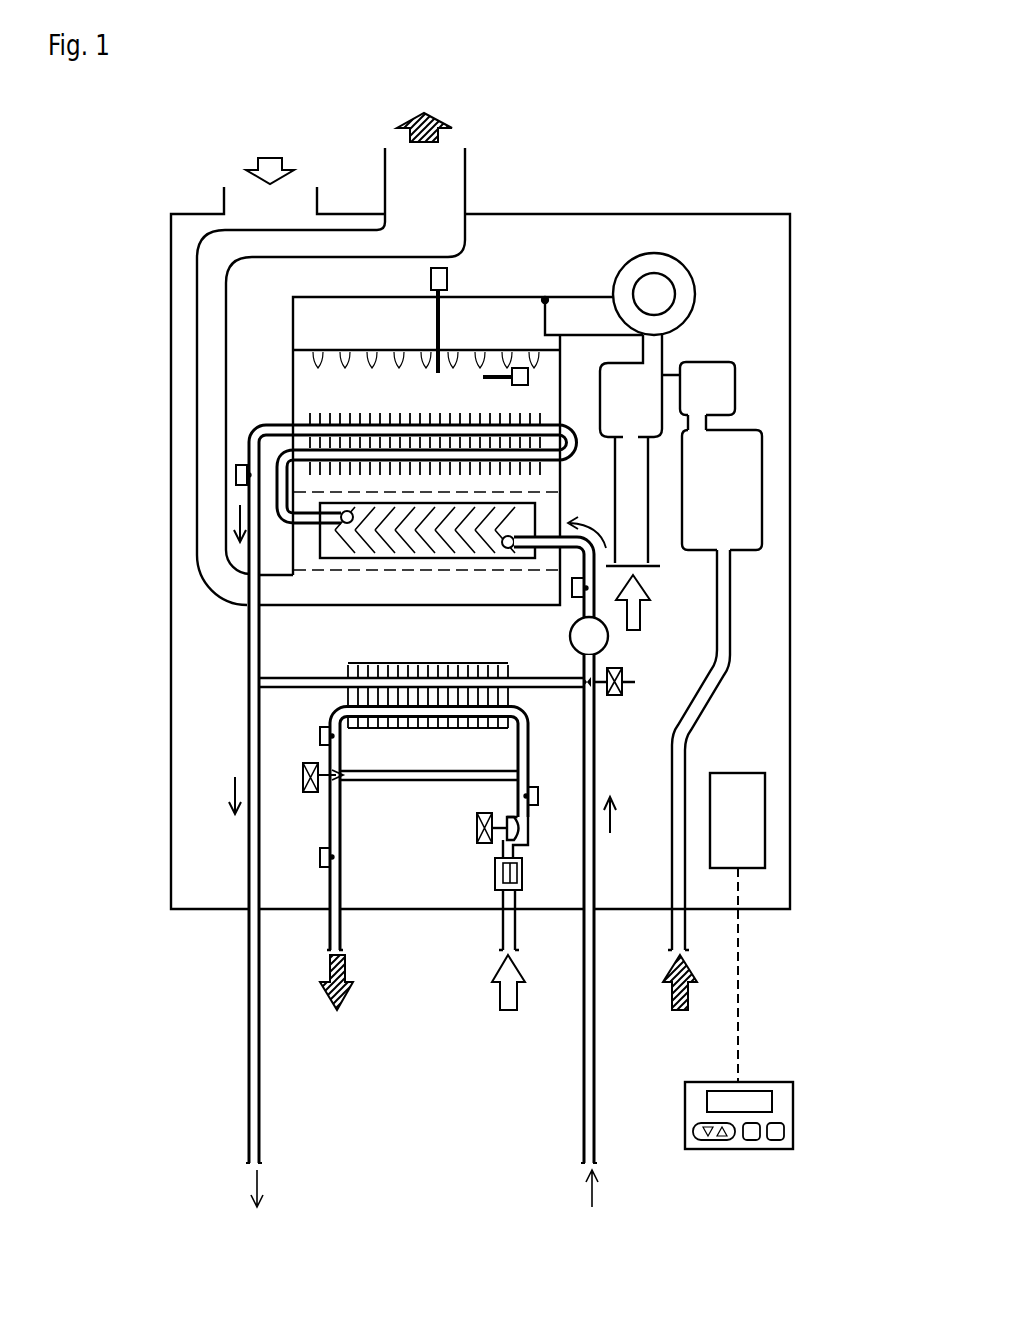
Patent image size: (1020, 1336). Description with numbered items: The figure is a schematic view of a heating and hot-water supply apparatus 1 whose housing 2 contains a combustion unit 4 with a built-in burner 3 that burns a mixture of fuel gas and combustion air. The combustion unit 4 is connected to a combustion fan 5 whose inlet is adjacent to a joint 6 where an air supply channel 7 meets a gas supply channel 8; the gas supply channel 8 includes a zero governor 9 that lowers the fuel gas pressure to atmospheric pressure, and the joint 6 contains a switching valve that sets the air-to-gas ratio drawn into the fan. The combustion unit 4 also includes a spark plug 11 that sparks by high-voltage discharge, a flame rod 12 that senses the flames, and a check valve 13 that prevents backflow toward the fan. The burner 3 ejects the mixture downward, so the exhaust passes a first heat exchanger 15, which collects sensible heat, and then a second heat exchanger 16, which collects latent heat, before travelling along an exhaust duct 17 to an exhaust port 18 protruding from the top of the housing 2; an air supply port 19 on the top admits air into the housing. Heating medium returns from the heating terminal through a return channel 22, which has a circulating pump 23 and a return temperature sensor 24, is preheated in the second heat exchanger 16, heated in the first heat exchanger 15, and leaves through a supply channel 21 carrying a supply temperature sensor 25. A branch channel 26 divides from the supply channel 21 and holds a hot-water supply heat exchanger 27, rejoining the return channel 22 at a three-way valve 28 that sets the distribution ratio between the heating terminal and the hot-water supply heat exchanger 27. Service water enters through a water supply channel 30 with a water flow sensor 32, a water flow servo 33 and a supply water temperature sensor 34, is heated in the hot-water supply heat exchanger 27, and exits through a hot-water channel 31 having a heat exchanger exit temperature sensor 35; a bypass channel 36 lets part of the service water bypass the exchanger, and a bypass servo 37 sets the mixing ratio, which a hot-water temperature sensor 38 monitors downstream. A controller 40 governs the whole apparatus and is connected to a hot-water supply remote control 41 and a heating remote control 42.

The heating and hot-water supply apparatus 1 is at (792, 160).
The housing 2 is at (692, 214).
The burner 3 is at (293, 372).
The combustion unit 4 is at (290, 327).
The combustion fan 5 is at (695, 294).
The joint 6 is at (667, 407).
The air supply channel 7 is at (650, 555).
The gas supply channel 8 is at (715, 690).
The zero governor 9 is at (762, 482).
The spark plug 11 is at (447, 330).
The flame rod 12 is at (493, 372).
The check valve 13 is at (548, 308).
The first heat exchanger 15 is at (305, 425).
The second heat exchanger 16 is at (340, 570).
The exhaust duct 17 is at (198, 520).
The exhaust port 18 is at (395, 142).
The air supply port 19 is at (233, 183).
The supply channel 21 is at (249, 740).
The return channel 22 is at (584, 1085).
The circulating pump 23 is at (570, 636).
The return temperature sensor 24 is at (572, 588).
The supply temperature sensor 25 is at (237, 475).
The branch channel 26 is at (285, 677).
The hot-water supply heat exchanger 27 is at (428, 663).
The three-way valve 28 is at (635, 682).
The water supply channel 30 is at (502, 922).
The hot-water channel 31 is at (343, 935).
The water flow sensor 32 is at (495, 870).
The water flow servo 33 is at (477, 828).
The supply water temperature sensor 34 is at (538, 795).
The heat exchanger exit temperature sensor 35 is at (320, 736).
The bypass channel 36 is at (385, 782).
The bypass servo 37 is at (303, 780).
The hot-water temperature sensor 38 is at (320, 857).
The controller 40 is at (765, 812).
The hot-water supply remote control 41 is at (793, 1110).
The heating remote control 42 is at (791, 1115).